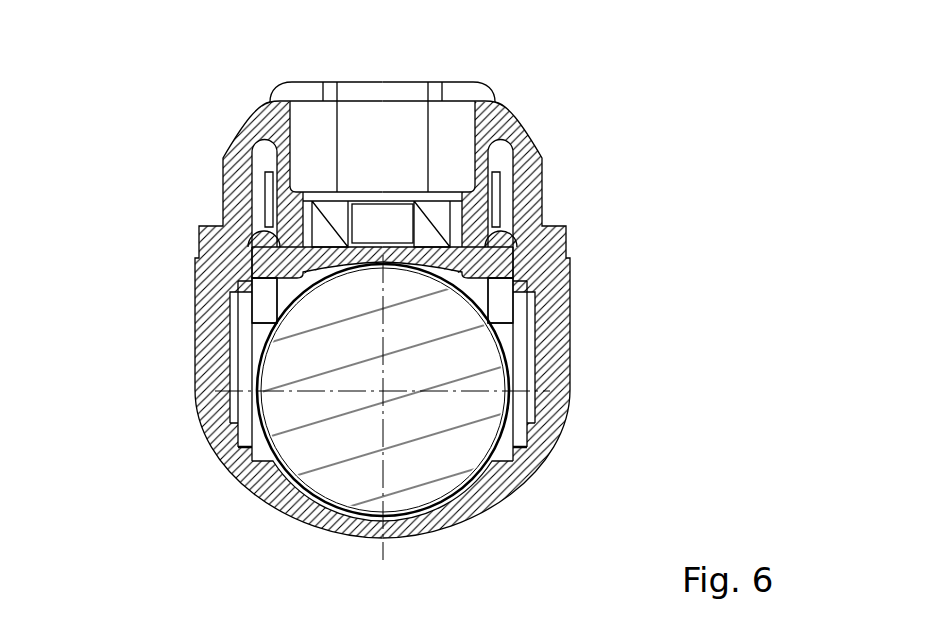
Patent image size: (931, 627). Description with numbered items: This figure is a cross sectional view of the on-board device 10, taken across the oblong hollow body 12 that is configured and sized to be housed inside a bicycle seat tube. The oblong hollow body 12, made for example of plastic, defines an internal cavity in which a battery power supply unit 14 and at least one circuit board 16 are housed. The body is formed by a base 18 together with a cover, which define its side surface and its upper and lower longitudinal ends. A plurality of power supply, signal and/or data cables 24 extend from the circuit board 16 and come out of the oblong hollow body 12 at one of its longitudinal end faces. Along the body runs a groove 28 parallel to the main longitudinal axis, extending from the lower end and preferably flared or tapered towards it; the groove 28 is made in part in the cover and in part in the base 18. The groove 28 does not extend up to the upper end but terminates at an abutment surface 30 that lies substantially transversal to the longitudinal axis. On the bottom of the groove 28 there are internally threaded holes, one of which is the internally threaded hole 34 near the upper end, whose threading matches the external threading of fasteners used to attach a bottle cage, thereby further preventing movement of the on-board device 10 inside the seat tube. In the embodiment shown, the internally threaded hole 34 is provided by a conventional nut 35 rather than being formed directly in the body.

The on-board device 10 is at (110, 251).
The oblong hollow body 12 is at (401, 70).
The battery power supply unit 14 is at (292, 437).
The circuit board 16 is at (477, 237).
The base 18 is at (427, 531).
The cables 24 is at (255, 210).
The groove 28 is at (327, 122).
The abutment surface 30 is at (384, 213).
The internally threaded hole 34 is at (380, 185).
The nut 35 is at (467, 212).